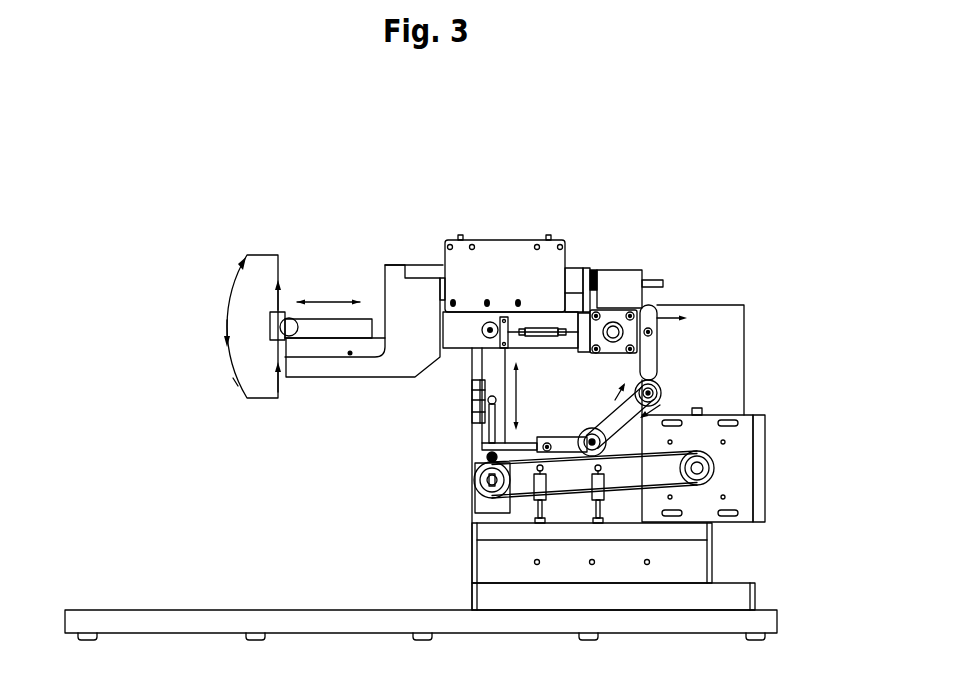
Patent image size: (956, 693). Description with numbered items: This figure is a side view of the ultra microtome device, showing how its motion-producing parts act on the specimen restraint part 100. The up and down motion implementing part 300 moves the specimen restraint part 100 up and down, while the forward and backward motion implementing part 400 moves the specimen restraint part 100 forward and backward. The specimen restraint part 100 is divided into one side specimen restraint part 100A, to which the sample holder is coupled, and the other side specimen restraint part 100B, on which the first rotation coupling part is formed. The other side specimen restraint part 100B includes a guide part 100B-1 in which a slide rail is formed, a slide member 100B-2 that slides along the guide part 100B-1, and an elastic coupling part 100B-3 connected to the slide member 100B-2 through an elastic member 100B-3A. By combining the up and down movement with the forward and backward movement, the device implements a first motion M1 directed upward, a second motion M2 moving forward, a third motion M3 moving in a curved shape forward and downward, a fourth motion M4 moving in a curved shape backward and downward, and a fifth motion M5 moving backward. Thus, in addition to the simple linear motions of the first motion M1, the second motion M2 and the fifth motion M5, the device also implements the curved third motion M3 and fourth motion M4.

The specimen restraint part 100 is at (535, 172).
The one side specimen restraint part 100A is at (414, 256).
The other side specimen restraint part 100B is at (571, 232).
The guide part 100B-1 is at (587, 268).
The slide member 100B-2 is at (577, 268).
The elastic coupling part 100B-3 is at (633, 283).
The elastic member 100B-3A is at (598, 270).
The up and down motion implementing part 300 is at (463, 404).
The forward and backward motion implementing part 400 is at (669, 353).
The first motion M1 is at (282, 263).
The second motion M2 is at (262, 255).
The third motion M3 is at (227, 295).
The fourth motion M4 is at (233, 378).
The fifth motion M5 is at (260, 398).